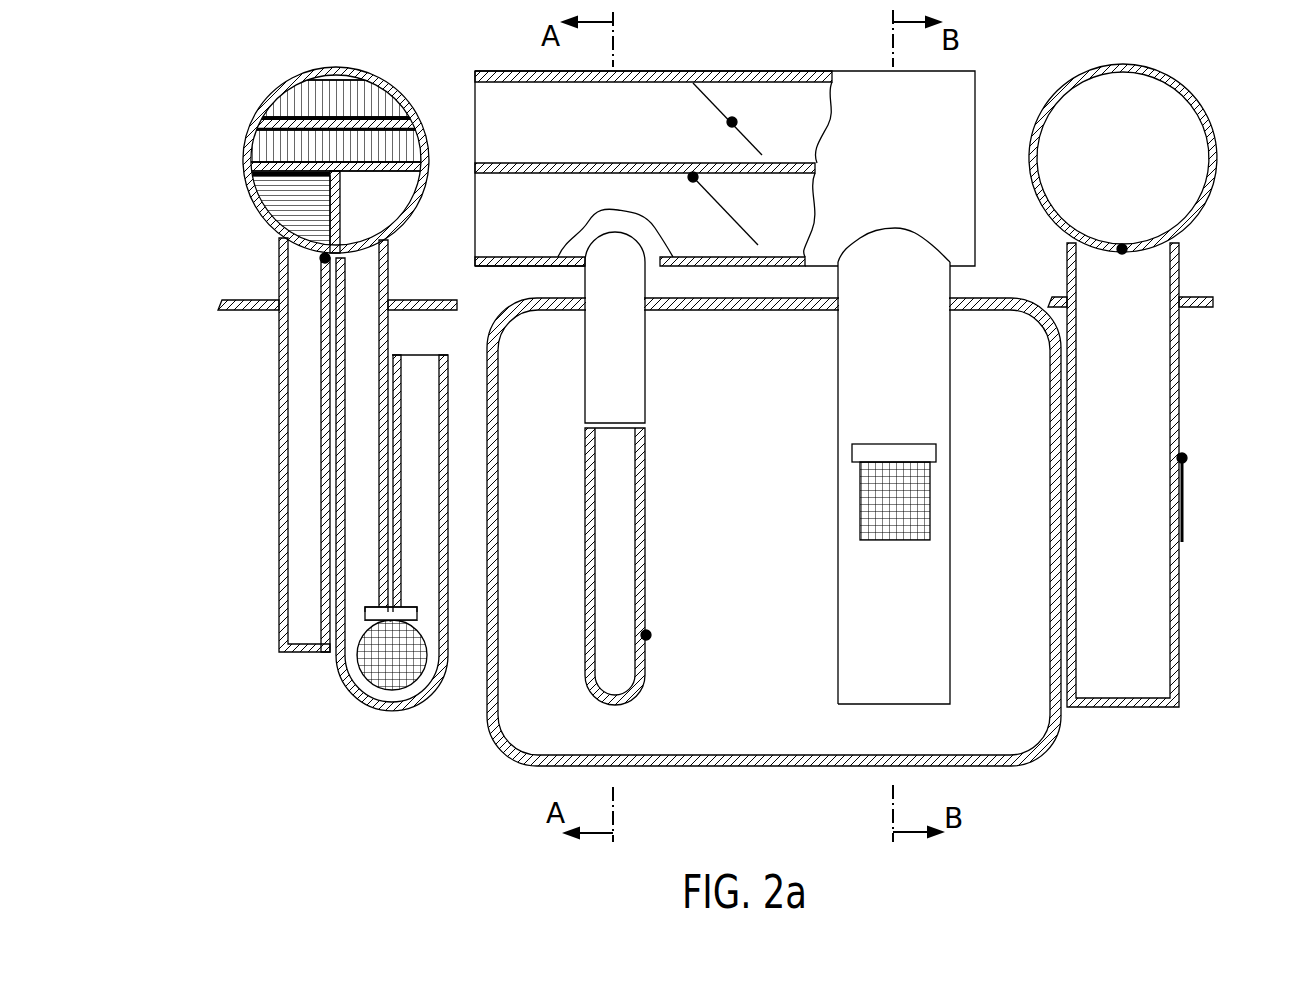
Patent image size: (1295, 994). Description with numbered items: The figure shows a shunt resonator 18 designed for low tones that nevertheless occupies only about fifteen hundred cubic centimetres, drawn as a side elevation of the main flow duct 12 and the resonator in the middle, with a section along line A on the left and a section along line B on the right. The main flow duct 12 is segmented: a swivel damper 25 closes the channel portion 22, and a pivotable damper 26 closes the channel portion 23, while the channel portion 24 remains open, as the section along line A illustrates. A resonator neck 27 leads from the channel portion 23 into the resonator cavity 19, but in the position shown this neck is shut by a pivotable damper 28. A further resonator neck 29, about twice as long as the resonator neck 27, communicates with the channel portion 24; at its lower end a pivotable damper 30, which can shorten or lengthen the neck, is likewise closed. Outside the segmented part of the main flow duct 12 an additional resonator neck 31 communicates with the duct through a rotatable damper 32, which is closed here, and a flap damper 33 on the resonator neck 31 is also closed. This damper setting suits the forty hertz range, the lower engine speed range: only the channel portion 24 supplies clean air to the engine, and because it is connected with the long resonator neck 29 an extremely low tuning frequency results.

The main flow duct 12 is at (965, 98).
The shunt resonator 18 is at (1025, 298).
The resonator cavity 19 is at (513, 717).
The channel portion 22 is at (683, 93).
The channel portion 23 is at (258, 220).
The channel portion 24 is at (372, 215).
The swivel damper 25 is at (290, 103).
The pivotable damper 26 is at (255, 205).
The resonator neck 27 is at (300, 447).
The pivotable damper 28 is at (320, 260).
The resonator neck 29 is at (368, 340).
The pivotable damper 30 is at (648, 640).
The resonator neck 31 is at (854, 368).
The rotatable damper 32 is at (1142, 248).
The flap damper 33 is at (922, 507).